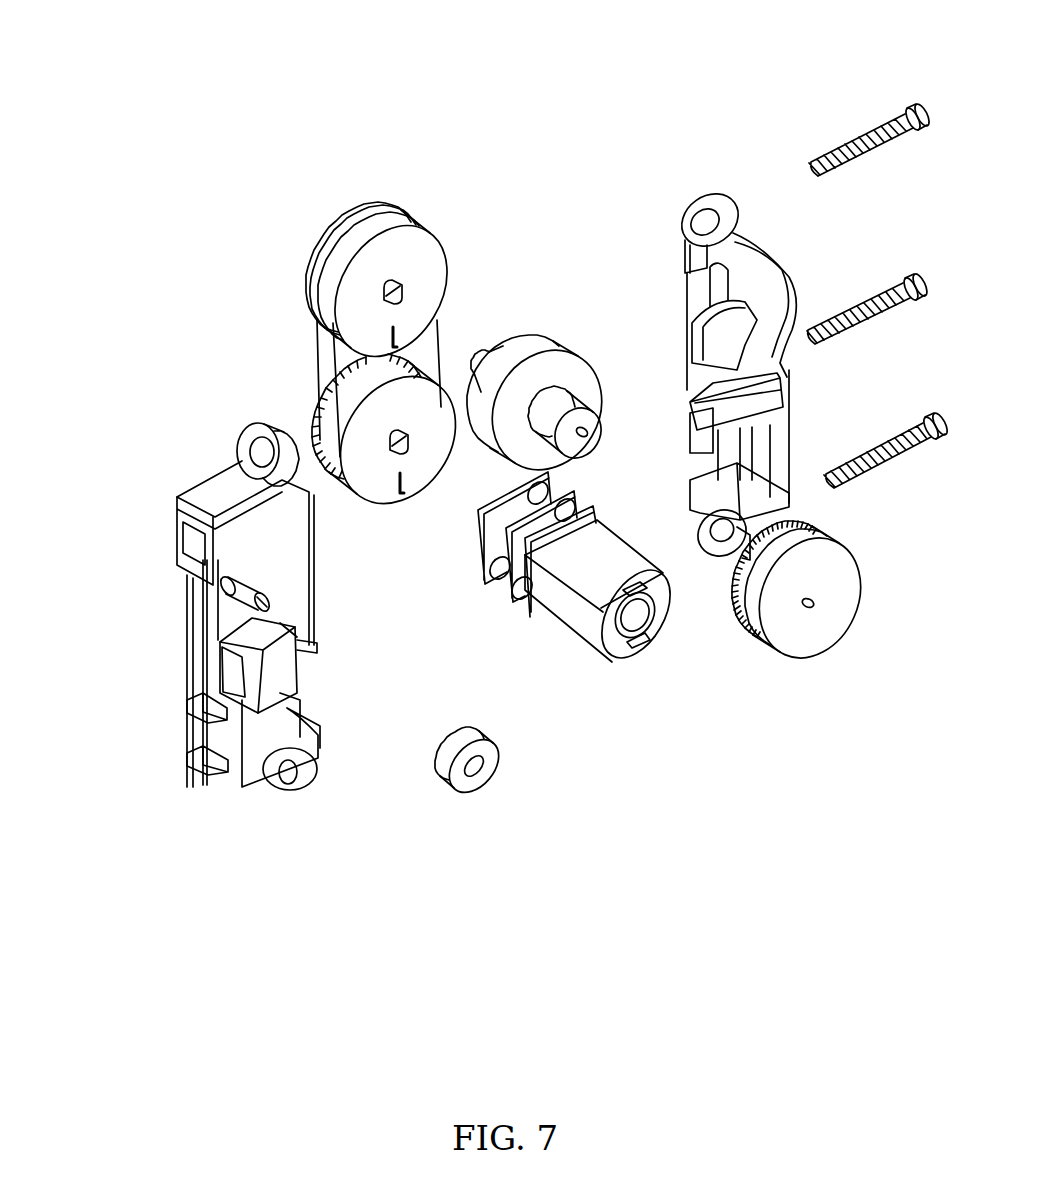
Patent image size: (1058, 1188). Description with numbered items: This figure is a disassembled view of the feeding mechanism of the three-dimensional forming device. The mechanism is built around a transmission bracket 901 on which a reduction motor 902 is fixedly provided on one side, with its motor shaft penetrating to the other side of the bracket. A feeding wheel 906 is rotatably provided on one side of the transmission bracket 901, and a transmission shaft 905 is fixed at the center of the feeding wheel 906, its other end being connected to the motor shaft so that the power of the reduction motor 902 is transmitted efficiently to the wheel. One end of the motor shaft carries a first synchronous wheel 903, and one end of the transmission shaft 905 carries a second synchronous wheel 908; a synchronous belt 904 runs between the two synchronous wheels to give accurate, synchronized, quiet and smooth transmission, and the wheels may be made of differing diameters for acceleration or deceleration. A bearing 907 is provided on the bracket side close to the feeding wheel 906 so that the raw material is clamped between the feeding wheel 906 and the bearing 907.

The transmission bracket 901 is at (670, 234).
The reduction motor 902 is at (584, 653).
The first synchronous wheel 903 is at (359, 491).
The synchronous belt 904 is at (313, 464).
The transmission shaft 905 is at (568, 423).
The feeding wheel 906 is at (839, 610).
The bearing 907 is at (496, 800).
The second synchronous wheel 908 is at (437, 271).